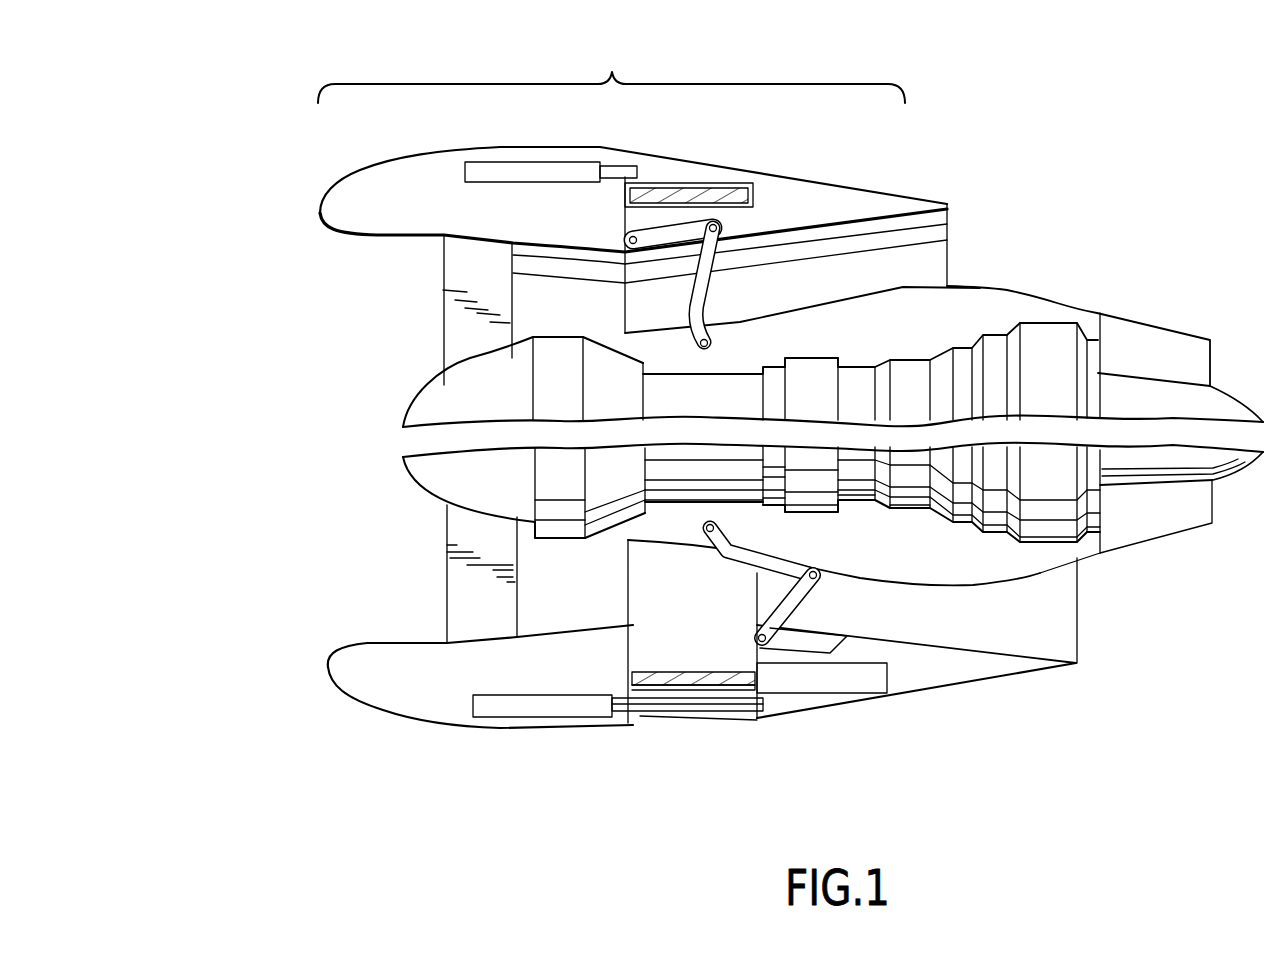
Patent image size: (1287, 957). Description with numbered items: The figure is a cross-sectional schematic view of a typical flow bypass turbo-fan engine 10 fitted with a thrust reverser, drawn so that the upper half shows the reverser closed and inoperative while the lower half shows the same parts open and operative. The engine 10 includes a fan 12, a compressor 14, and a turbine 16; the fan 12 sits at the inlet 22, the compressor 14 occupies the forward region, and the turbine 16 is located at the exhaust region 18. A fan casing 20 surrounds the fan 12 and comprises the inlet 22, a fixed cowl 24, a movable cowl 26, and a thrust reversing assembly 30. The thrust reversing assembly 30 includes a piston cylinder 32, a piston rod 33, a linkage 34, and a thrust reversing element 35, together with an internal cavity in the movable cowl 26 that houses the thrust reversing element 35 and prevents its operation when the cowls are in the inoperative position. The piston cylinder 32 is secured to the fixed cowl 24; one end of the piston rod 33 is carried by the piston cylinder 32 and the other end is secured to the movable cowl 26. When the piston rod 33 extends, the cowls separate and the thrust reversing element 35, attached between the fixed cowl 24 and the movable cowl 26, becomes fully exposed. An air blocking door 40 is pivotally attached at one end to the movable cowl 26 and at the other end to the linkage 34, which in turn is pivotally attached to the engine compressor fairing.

The engine 10 is at (403, 471).
The fan 12 is at (473, 592).
The compressor 14 is at (517, 405).
The turbine 16 is at (1069, 397).
The exhaust region 18 is at (1108, 277).
The fan casing 20 is at (611, 67).
The inlet 22 is at (380, 280).
The fixed cowl 24 is at (340, 200).
The movable cowl 26 is at (807, 190).
The thrust reversing assembly 30 is at (928, 162).
The piston cylinder 32 is at (513, 707).
The piston rod 33 is at (700, 710).
The linkage 34 is at (740, 563).
The thrust reversing element 35 is at (723, 682).
The air blocking door 40 is at (793, 605).